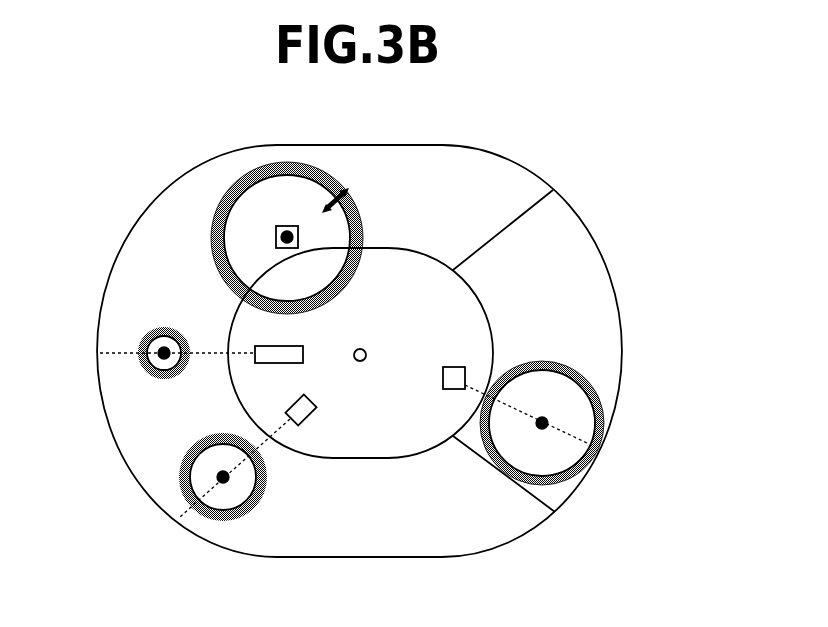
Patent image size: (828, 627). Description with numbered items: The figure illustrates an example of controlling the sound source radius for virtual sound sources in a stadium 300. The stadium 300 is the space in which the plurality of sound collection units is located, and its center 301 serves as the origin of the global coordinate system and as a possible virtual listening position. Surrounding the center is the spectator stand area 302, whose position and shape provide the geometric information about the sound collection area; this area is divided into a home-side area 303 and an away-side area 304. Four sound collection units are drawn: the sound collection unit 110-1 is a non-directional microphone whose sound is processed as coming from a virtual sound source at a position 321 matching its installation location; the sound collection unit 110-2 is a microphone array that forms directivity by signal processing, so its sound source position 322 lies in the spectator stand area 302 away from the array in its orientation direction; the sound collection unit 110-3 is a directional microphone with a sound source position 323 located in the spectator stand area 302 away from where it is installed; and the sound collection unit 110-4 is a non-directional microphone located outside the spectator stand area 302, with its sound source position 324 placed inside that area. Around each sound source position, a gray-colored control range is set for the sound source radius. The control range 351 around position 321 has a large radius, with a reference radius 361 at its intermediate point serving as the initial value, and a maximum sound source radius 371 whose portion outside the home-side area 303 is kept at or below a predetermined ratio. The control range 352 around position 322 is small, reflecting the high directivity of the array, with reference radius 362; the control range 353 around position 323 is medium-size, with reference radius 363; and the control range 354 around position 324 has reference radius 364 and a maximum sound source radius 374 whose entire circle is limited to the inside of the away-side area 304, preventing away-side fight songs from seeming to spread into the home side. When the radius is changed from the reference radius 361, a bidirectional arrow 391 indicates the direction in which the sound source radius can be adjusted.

The stadium 300 is at (156, 124).
The center 301 is at (363, 362).
The spectator stand area 302 is at (505, 175).
The home-side area 303 is at (128, 258).
The away-side area 304 is at (570, 230).
The position 321 is at (288, 228).
The position 322 is at (148, 337).
The position 323 is at (228, 478).
The position 324 is at (548, 418).
The control range 351 is at (223, 258).
The control range 352 is at (153, 373).
The control range 353 is at (225, 434).
The control range 354 is at (585, 380).
The reference radius 361 is at (222, 220).
The reference radius 362 is at (202, 318).
The reference radius 363 is at (190, 450).
The reference radius 364 is at (530, 368).
The maximum sound source radius 371 is at (220, 283).
The maximum sound source radius 374 is at (558, 360).
The bidirectional arrow 391 is at (346, 190).
The sound collection unit 110-1 is at (300, 237).
The sound collection unit 110-2 is at (268, 345).
The sound collection unit 110-3 is at (305, 421).
The sound collection unit 110-4 is at (452, 367).